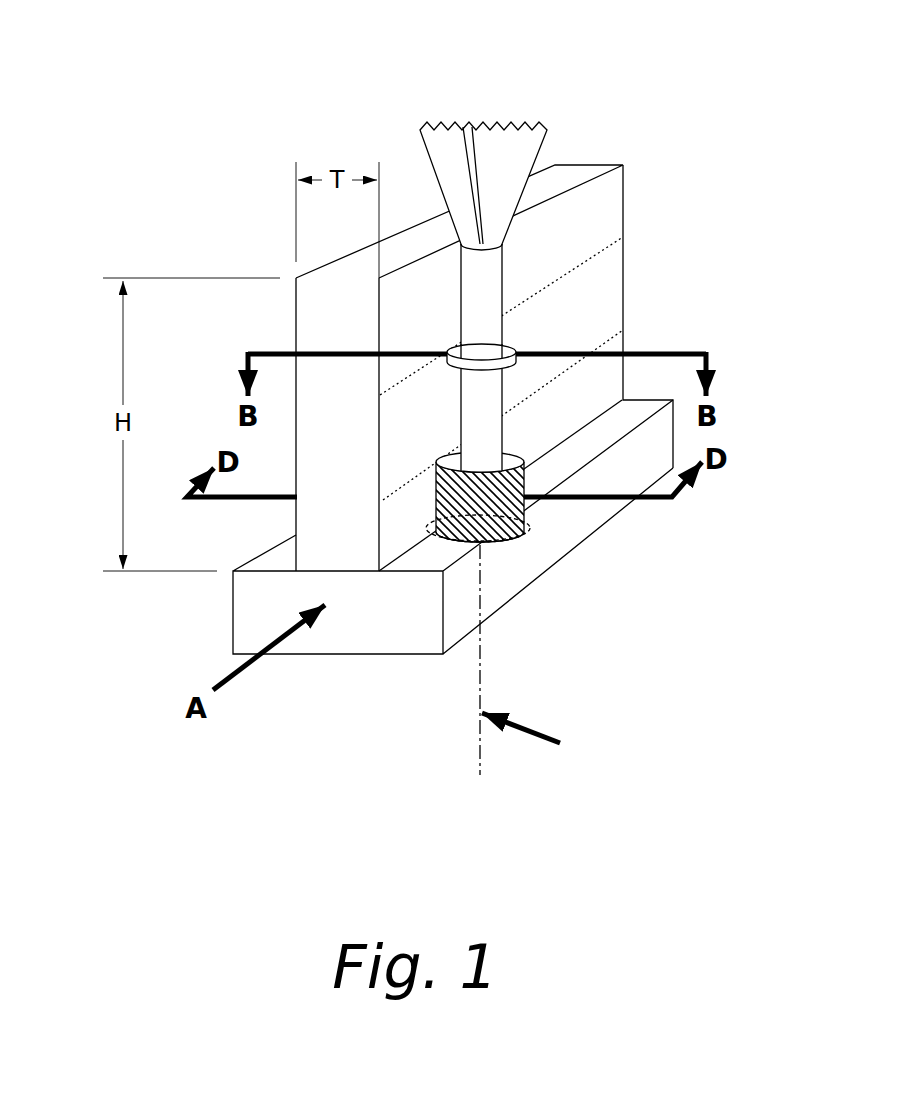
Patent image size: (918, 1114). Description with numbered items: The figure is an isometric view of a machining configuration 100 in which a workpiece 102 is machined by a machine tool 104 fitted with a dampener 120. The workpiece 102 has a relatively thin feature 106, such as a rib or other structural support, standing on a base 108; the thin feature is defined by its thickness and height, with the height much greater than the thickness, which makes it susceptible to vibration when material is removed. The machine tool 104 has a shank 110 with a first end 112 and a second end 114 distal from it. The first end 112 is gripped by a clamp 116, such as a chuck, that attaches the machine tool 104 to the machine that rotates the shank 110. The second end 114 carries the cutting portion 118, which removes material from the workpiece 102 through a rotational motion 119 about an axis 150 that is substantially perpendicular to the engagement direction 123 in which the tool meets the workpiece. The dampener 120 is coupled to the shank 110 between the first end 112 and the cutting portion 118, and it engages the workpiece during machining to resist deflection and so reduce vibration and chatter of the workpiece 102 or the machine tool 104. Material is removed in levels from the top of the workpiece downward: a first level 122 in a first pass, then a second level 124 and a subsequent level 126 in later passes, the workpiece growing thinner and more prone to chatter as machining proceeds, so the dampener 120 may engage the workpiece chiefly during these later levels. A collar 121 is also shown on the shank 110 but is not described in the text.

The machining configuration 100 is at (140, 66).
The workpiece 102 is at (270, 258).
The machine tool 104 is at (548, 534).
The thin feature 106 is at (326, 312).
The base 108 is at (361, 630).
The shank 110 is at (503, 273).
The first end 112 is at (507, 247).
The second end 114 is at (508, 552).
The clamp 116 is at (546, 133).
The cutting portion 118 is at (493, 543).
The rotational motion 119 is at (528, 520).
The dampener 120 is at (513, 348).
The collar 121 is at (452, 364).
The first level 122 is at (614, 203).
The engagement direction 123 is at (546, 740).
The second level 124 is at (614, 277).
The subsequent level 126 is at (614, 342).
The axis 150 is at (480, 743).